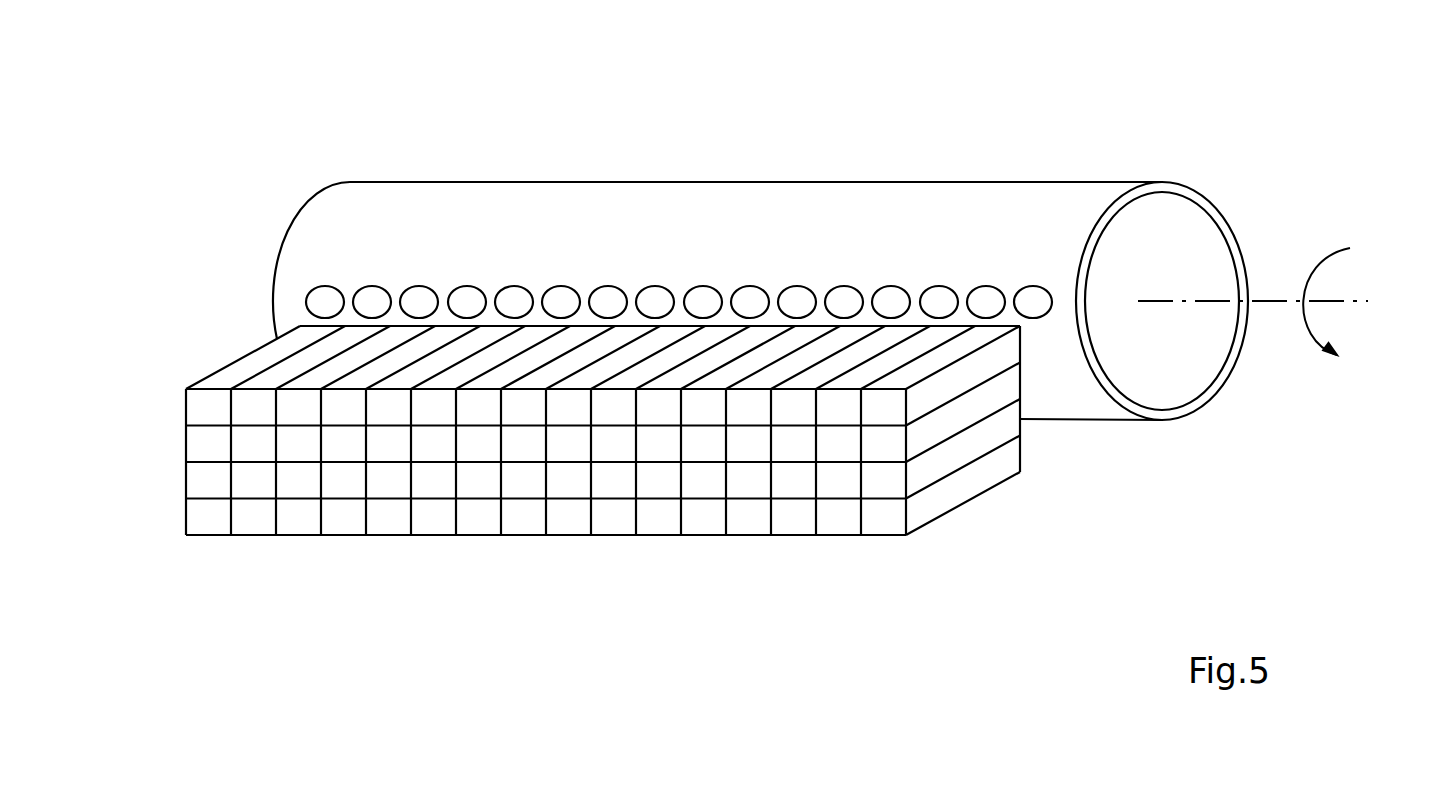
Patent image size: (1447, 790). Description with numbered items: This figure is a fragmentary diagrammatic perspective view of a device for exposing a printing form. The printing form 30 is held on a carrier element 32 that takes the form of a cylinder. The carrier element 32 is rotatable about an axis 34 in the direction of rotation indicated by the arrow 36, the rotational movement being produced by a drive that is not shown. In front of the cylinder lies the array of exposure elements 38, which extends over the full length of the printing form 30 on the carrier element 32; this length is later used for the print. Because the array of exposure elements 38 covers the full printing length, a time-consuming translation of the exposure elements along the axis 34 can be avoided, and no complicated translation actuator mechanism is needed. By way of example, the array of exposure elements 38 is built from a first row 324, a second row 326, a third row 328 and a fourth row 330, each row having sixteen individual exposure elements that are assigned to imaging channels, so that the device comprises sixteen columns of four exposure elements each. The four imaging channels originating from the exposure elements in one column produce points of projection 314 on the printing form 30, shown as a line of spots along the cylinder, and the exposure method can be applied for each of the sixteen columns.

The printing form 30 is at (1163, 183).
The carrier element 32 is at (1188, 237).
The axis 34 is at (1350, 299).
The arrow 36 is at (1350, 247).
The array of exposure elements 38 is at (550, 403).
The points of projection 314 is at (938, 290).
The first row 324 is at (168, 408).
The second row 326 is at (168, 447).
The third row 328 is at (168, 481).
The fourth row 330 is at (168, 518).